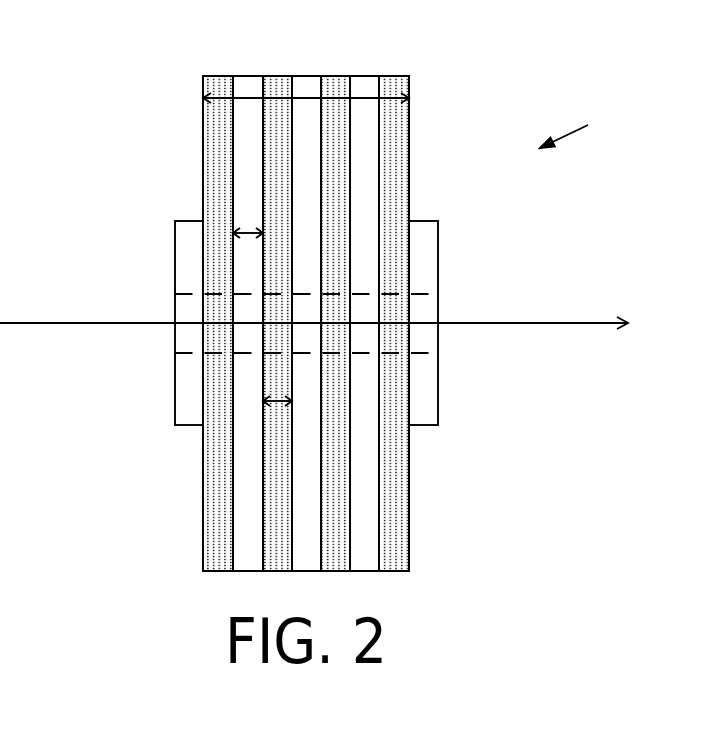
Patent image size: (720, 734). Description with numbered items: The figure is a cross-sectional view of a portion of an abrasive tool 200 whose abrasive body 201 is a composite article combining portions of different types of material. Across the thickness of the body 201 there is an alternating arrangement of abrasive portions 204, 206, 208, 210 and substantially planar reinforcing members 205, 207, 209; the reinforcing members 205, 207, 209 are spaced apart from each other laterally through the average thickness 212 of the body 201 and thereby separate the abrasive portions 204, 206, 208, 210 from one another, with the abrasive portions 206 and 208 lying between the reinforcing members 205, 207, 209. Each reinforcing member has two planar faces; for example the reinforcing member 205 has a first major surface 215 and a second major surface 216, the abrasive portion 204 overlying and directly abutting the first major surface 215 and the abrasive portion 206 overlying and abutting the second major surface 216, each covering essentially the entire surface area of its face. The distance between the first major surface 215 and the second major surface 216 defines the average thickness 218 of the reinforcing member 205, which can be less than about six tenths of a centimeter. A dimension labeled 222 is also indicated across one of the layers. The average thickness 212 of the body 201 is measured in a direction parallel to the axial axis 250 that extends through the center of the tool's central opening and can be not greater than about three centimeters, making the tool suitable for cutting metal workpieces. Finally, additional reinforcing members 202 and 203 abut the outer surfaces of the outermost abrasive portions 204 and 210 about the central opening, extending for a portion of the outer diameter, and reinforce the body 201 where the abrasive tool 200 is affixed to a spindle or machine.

The abrasive tool 200 is at (221, 310).
The abrasive body 201 is at (585, 123).
The reinforcing member 202 is at (130, 338).
The reinforcing member 203 is at (483, 323).
The abrasive portion 204 is at (161, 342).
The reinforcing member 205 is at (185, 323).
The abrasive portion 206 is at (198, 323).
The reinforcing member 207 is at (410, 323).
The abrasive portion 208 is at (424, 323).
The reinforcing member 209 is at (433, 323).
The abrasive portion 210 is at (468, 323).
The average thickness 212 is at (336, 70).
The first major surface 215 is at (170, 240).
The second major surface 216 is at (267, 333).
The average thickness 218 is at (267, 277).
The layer thickness 222 is at (195, 464).
The axial axis 250 is at (314, 298).